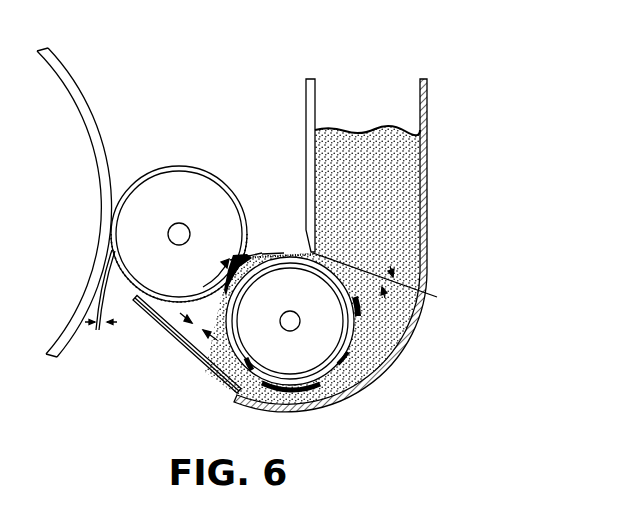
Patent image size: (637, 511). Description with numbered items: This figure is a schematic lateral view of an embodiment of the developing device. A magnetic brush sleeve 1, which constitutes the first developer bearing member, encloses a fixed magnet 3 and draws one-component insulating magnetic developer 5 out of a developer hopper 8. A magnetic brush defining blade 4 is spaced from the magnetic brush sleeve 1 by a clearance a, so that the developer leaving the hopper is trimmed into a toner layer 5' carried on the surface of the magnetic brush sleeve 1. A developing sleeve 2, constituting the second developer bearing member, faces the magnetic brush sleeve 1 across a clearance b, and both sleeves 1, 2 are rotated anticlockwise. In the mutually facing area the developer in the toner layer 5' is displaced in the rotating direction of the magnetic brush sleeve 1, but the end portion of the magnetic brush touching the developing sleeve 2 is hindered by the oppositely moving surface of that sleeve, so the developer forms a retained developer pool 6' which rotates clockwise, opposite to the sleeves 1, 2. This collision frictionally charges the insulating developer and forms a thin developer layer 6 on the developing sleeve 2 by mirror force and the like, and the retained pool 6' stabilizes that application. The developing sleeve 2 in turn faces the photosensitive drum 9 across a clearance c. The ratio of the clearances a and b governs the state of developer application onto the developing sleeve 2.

The magnetic brush sleeve 1 is at (271, 253).
The developing sleeve 2 is at (185, 167).
The fixed magnet 3 is at (267, 372).
The magnetic brush defining blade 4 is at (309, 178).
The one-component insulating magnetic developer 5 is at (330, 265).
The toner layer 5' is at (277, 231).
The thin developer layer 6 is at (179, 216).
The retained developer pool 6' is at (249, 216).
The developer hopper 8 is at (427, 155).
The photosensitive drum 9 is at (84, 103).
The clearance a is at (384, 283).
The clearance b is at (217, 287).
The clearance c is at (97, 331).